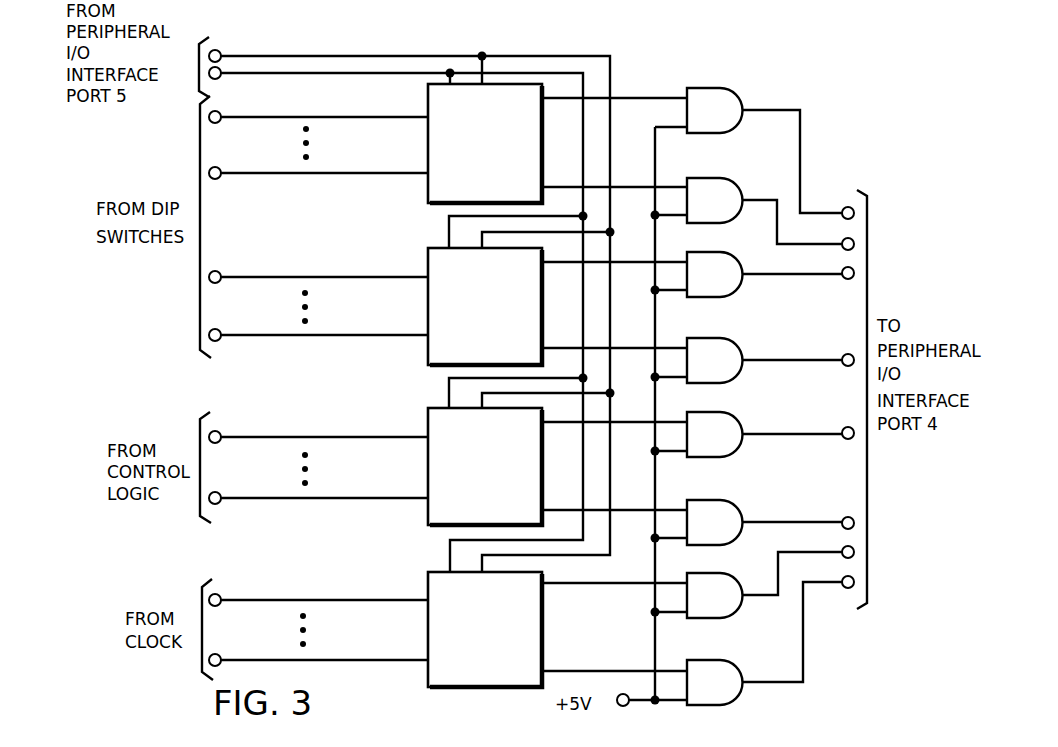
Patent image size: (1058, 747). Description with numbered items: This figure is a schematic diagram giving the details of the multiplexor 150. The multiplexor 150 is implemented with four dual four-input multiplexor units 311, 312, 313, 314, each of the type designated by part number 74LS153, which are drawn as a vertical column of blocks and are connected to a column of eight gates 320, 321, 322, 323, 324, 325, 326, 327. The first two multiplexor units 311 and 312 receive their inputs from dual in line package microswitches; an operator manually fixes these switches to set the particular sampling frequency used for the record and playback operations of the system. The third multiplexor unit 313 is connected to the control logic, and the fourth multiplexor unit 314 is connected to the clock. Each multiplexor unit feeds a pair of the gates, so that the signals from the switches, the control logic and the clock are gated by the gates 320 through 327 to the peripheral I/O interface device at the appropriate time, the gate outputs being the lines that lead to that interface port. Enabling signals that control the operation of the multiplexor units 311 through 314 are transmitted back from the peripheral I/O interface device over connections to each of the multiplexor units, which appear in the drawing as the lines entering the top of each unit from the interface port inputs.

The multiplexor 150 is at (531, 387).
The dual 4-input multiplexor unit 311 is at (485, 143).
The dual 4-input multiplexor unit 312 is at (485, 306).
The dual 4-input multiplexor unit 313 is at (485, 466).
The dual 4-input multiplexor unit 314 is at (485, 629).
The gate 320 is at (713, 88).
The gate 321 is at (713, 178).
The gate 322 is at (713, 252).
The gate 323 is at (713, 338).
The gate 324 is at (713, 412).
The gate 325 is at (713, 500).
The gate 326 is at (713, 573).
The gate 327 is at (713, 660).